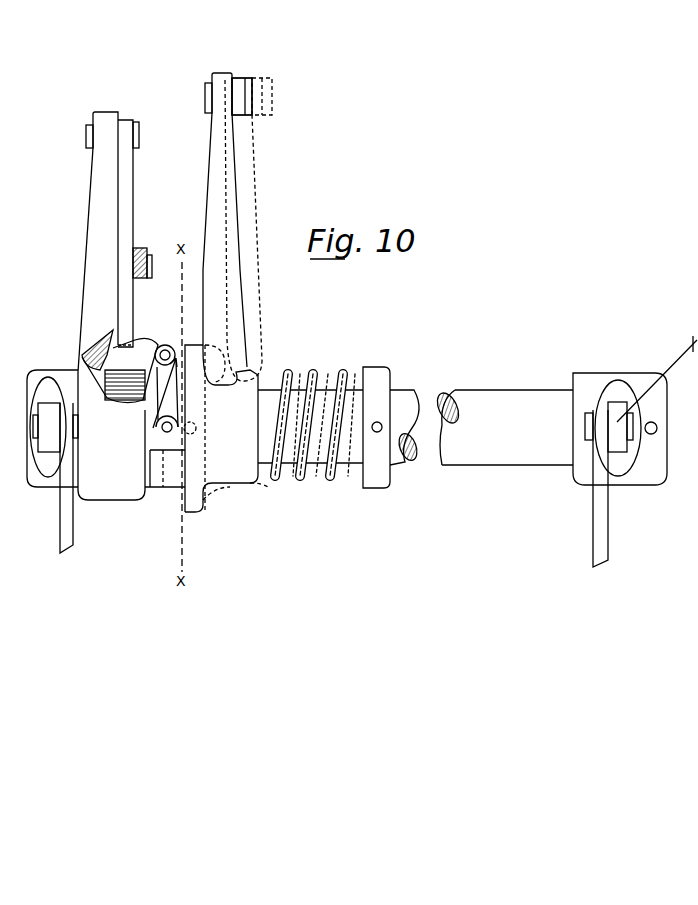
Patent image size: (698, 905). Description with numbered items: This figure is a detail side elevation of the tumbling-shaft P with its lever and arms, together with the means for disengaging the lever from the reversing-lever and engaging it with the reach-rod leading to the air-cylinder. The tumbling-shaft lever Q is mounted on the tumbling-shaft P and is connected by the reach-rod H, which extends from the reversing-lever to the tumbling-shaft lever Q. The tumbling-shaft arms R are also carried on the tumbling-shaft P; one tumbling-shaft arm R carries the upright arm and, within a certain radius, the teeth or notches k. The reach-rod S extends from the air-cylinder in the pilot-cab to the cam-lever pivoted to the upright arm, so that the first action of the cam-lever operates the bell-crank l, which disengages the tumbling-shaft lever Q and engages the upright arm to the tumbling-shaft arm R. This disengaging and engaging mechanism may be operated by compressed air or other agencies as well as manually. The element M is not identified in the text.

The tumbling-shaft lever Q is at (95, 198).
The arm member M is at (122, 200).
The reach-rod S is at (142, 250).
The reach-rod H is at (238, 84).
The tumbling-shaft arm R is at (50, 417).
The teeth or notches k is at (92, 350).
The bell-crank l is at (148, 345).
The tumbling-shaft P is at (486, 405).